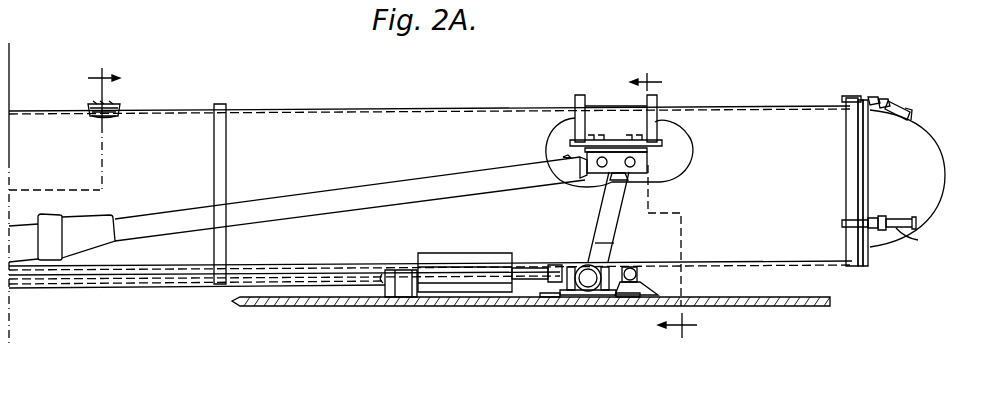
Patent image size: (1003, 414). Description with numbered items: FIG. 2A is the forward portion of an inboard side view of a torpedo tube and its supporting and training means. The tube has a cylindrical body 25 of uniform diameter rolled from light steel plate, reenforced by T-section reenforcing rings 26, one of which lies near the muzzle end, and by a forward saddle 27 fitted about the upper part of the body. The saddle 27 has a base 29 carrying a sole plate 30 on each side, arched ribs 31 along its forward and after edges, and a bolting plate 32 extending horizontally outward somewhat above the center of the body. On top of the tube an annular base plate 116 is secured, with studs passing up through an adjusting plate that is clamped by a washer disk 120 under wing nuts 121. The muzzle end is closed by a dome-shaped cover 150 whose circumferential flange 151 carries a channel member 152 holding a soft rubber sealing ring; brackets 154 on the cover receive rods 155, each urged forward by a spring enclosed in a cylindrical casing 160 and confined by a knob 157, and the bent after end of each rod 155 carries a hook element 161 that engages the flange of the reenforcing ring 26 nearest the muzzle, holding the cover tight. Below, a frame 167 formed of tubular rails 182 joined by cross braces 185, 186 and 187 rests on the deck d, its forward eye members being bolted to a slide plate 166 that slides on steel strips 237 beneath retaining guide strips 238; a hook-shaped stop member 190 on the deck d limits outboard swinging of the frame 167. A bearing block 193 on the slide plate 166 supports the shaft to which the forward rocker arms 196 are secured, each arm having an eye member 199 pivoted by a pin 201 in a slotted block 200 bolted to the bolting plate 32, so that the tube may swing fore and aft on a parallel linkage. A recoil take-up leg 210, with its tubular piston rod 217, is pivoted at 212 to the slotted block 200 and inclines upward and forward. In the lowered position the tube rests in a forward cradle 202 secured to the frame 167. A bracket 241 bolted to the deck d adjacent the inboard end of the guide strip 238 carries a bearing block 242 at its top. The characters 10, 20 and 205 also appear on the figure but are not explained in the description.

The centerline 10 is at (104, 120).
The section line 20 is at (663, 205).
The cylindrical body 25 is at (310, 118).
The reenforcing rings 26 is at (222, 118).
The forward saddle 27 is at (598, 97).
The base 29 is at (613, 105).
The sole plate 30 is at (685, 137).
The arched ribs 31 is at (577, 97).
The bolting plate 32 is at (655, 158).
The annular base plate 116 is at (120, 110).
The washer disk 120 is at (110, 101).
The wing nuts 121 is at (92, 105).
The dome-shaped cover 150 is at (905, 135).
The circumferential flange 151 is at (870, 180).
The channel member 152 is at (866, 158).
The brackets 154 is at (886, 108).
The rods 155 is at (858, 98).
The knob 157 is at (927, 105).
The cylindrical casing 160 is at (908, 108).
The hook element 161 is at (843, 97).
The slide plate 166 is at (566, 280).
The frame 167 is at (62, 290).
The rails 182 is at (133, 290).
The cross brace 185 is at (47, 290).
The cross brace 186 is at (176, 287).
The cross brace 187 is at (212, 290).
The hook-shaped stop member 190 is at (340, 300).
The bearing block 193 is at (670, 262).
The forward rocker arms 196 is at (606, 214).
The eye member 199 is at (638, 178).
The slotted block 200 is at (640, 165).
The pin 201 is at (632, 168).
The forward cradle 202 is at (401, 297).
The cylinder 205 is at (442, 293).
The recoil take-up legs 210 is at (334, 190).
The pivot 212 is at (574, 170).
The tubular piston rod 217 is at (153, 221).
The steel strips 237 is at (588, 300).
The retaining guide strips 238 is at (620, 298).
The bracket 241 is at (655, 286).
The bearing block 242 is at (631, 266).
The deck d is at (748, 306).